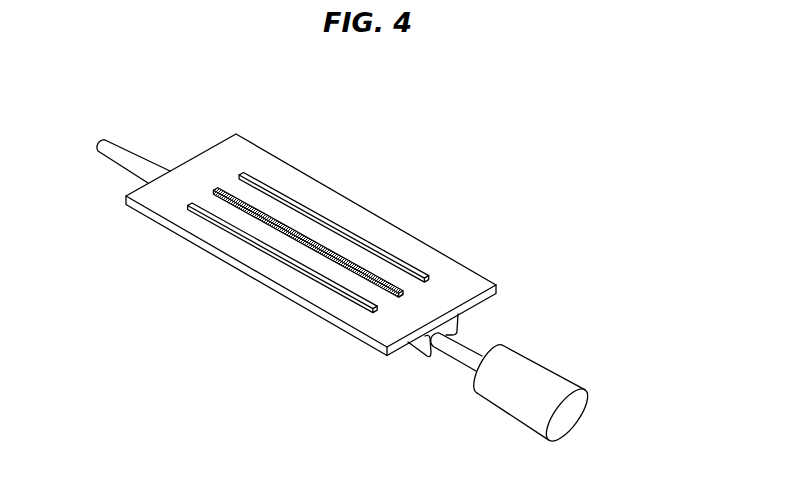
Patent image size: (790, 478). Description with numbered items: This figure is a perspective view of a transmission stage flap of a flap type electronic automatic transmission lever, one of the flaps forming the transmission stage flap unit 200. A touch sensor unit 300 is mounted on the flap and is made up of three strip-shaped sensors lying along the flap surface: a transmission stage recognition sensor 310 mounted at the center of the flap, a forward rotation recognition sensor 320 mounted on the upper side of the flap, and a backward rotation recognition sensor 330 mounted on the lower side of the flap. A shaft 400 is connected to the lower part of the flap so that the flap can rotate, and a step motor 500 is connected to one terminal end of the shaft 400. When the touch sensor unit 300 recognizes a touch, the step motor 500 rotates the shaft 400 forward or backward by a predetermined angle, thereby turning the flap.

The transmission stage flap unit 200 is at (608, 109).
The touch sensor unit 300 is at (364, 111).
The transmission stage recognition sensor 310 is at (312, 238).
The forward rotation recognition sensor 320 is at (283, 190).
The backward rotation recognition sensor 330 is at (346, 290).
The shaft 400 is at (128, 162).
The step motor 500 is at (528, 380).